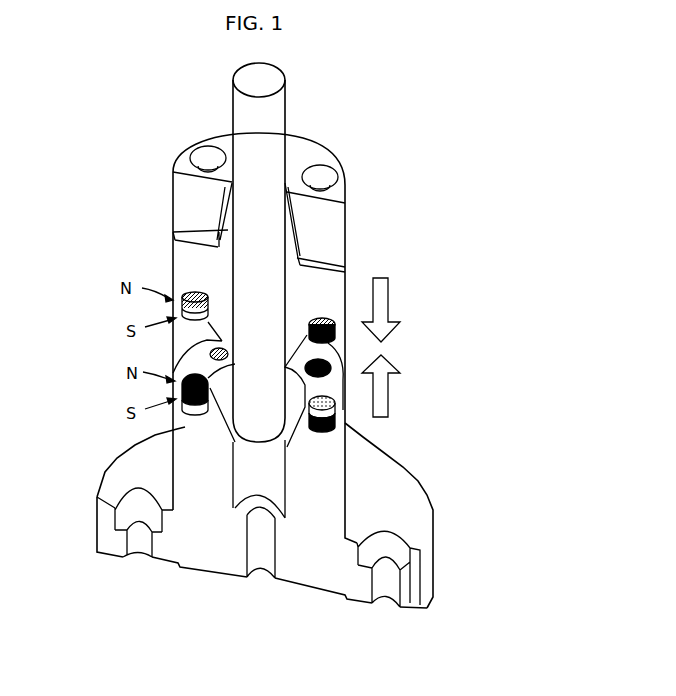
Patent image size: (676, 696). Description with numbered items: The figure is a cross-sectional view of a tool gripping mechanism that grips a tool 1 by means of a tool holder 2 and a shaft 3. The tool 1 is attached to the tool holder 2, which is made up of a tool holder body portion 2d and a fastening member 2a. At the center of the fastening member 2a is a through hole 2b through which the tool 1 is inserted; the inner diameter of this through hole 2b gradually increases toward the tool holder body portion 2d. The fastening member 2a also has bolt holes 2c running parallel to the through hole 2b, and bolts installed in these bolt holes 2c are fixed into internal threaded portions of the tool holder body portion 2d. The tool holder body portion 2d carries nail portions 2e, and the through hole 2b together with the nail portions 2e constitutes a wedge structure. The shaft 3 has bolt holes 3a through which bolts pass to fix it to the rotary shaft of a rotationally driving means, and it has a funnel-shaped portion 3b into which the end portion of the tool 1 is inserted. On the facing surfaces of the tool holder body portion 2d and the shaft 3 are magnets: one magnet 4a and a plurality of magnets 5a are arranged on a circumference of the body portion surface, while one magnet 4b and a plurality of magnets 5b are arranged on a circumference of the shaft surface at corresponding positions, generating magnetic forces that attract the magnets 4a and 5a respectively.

The tool 1 is at (285, 117).
The tool holder 2 is at (269, 318).
The fastening member 2a is at (333, 222).
The through hole 2b is at (222, 222).
The bolt holes 2c is at (327, 177).
The tool holder body portion 2d is at (328, 298).
The nail portions 2e is at (218, 229).
The shaft 3 is at (298, 465).
The bolt holes 3a is at (388, 544).
The funnel-shaped portion 3b is at (230, 407).
The magnet 4a is at (167, 308).
The magnet 4b is at (167, 398).
The magnets 5a is at (333, 338).
The magnets 5b is at (337, 418).